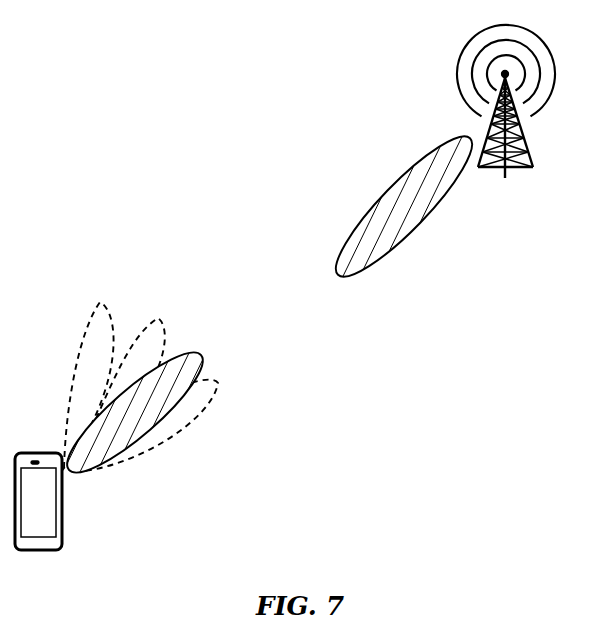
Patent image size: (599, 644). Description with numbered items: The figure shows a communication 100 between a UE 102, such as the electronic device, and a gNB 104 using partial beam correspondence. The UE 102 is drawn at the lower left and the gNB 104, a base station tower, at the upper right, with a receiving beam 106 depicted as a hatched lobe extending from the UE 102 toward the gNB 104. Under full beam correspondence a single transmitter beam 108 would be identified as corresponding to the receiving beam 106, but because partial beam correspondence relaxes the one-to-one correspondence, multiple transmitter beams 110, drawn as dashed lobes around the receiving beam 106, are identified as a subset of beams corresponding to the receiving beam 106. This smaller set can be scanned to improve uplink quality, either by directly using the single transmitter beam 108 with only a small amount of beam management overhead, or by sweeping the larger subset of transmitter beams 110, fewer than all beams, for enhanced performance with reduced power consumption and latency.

The communication 100 is at (98, 116).
The UE 102 is at (63, 508).
The gNB 104 is at (520, 154).
The receiving beam 106 is at (198, 353).
The single transmitter beam 108 is at (166, 321).
The transmitter beams 110 is at (104, 306).